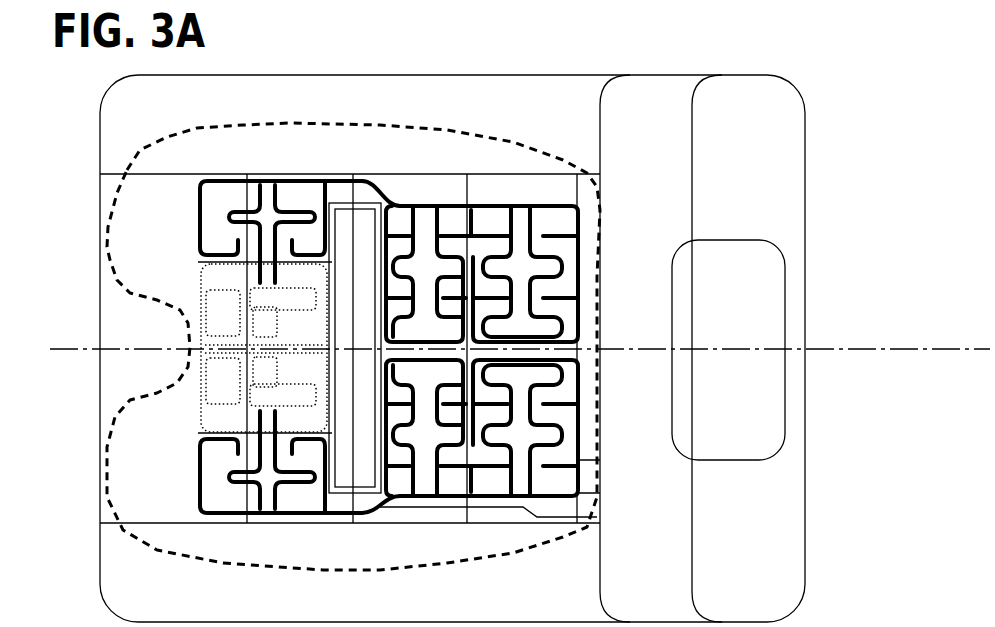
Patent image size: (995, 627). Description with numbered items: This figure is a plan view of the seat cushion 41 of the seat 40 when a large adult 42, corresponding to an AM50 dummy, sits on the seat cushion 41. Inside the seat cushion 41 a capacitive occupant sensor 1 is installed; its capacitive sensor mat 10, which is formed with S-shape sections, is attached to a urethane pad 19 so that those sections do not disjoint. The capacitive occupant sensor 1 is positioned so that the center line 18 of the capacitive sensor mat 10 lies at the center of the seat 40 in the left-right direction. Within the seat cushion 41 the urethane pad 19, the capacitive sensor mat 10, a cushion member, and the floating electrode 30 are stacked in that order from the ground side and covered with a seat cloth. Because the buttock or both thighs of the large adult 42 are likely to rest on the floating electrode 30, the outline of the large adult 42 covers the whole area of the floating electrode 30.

The capacitive occupant sensor 1 is at (493, 196).
The capacitive sensor mat 10 is at (307, 200).
The center line 18 is at (832, 340).
The urethane pad 19 is at (427, 194).
The floating electrode 30 is at (200, 368).
The seat 40 is at (806, 146).
The seat cushion 41 is at (553, 125).
The large adult 42 is at (192, 127).